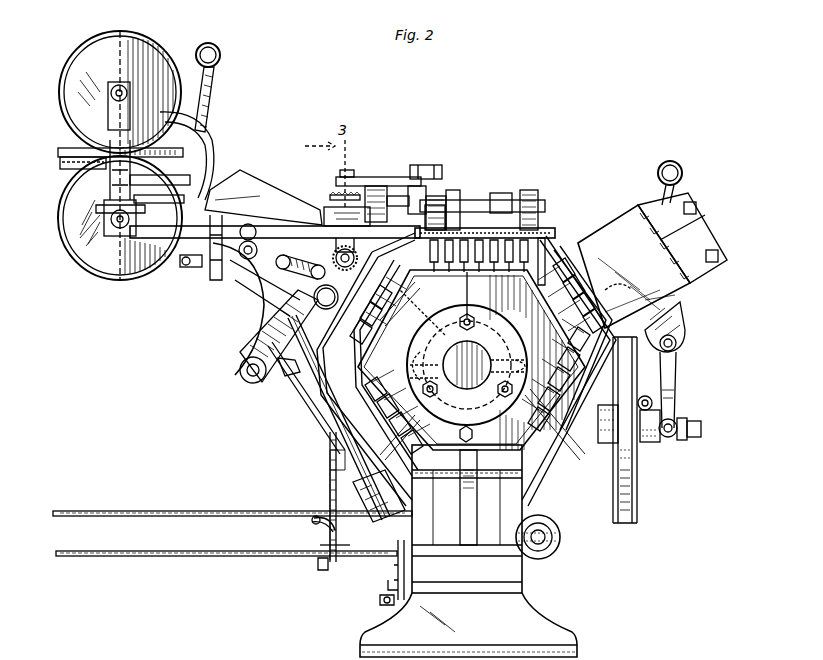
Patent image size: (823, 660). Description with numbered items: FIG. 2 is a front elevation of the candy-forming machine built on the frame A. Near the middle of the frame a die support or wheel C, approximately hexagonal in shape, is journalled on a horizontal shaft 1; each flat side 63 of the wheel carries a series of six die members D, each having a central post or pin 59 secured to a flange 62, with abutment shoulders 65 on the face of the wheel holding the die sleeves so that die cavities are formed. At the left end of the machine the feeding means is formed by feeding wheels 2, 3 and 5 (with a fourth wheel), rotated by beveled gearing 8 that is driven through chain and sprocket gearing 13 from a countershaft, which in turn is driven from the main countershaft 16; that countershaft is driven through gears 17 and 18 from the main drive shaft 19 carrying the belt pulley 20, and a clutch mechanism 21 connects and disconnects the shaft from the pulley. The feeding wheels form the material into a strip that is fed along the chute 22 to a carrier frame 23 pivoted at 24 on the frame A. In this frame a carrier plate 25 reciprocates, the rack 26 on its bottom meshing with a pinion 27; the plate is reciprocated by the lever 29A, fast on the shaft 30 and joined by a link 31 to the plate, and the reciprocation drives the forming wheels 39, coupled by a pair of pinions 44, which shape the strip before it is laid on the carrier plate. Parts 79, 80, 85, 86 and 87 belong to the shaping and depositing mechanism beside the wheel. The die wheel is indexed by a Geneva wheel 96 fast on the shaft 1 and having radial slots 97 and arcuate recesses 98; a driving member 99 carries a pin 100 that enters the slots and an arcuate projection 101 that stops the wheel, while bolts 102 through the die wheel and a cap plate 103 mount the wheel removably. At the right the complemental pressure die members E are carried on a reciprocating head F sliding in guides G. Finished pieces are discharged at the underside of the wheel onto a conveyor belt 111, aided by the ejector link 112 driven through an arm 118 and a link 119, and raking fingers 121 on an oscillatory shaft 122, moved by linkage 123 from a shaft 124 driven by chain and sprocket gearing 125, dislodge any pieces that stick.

The horizontal shaft 1 is at (453, 365).
The feeding wheel 2 is at (90, 46).
The feeding wheel 3 is at (84, 252).
The feeding wheel 5 is at (58, 156).
The beveled gearing 8 is at (112, 235).
The chain and sprocket gearing 13 is at (92, 205).
The main countershaft 16 is at (458, 443).
The gear 17 is at (455, 600).
The gear 18 is at (590, 470).
The main drive shaft 19 is at (696, 421).
The belt pulley 20 is at (638, 505).
The clutch mechanism 21 is at (648, 446).
The chute 22 is at (258, 192).
The frame 23 is at (258, 305).
The pivot 24 is at (212, 280).
The carrier plate 25 is at (258, 330).
The guide 26 is at (426, 298).
The pinion 27 is at (316, 280).
The arm 29A is at (305, 392).
The shaft 30 is at (252, 384).
The link 31 is at (316, 262).
The forming wheels 39 is at (324, 216).
The pinions 44 is at (340, 192).
The central post or pin 59 is at (348, 320).
The flanges 62 is at (458, 290).
The flat side 63 is at (470, 226).
The abutment shoulders 65 is at (424, 258).
The upper rail 79 is at (490, 200).
The block 80 is at (434, 195).
The shaft 85 is at (377, 178).
The collar 86 is at (412, 178).
The bar 87 is at (340, 174).
The Geneva wheel 96 is at (411, 362).
The radial slots 97 is at (449, 334).
The arcuate recesses 98 is at (471, 360).
The driving member 99 is at (568, 258).
The pin 100 is at (470, 300).
The arcuate projection 101 is at (555, 418).
The bolts 102 is at (474, 368).
The cap plate 103 is at (440, 425).
The conveyor belt 111 is at (180, 511).
The ejector link 112 is at (560, 530).
The arm 118 is at (380, 600).
The link 119 is at (396, 578).
The raking fingers 121 is at (334, 463).
The oscillatory shaft 122 is at (312, 412).
The linkage 123 is at (320, 532).
The shaft 124 is at (316, 555).
The chain and sprocket gearing 125 is at (330, 492).
The frame A is at (450, 190).
The die support or wheel C is at (548, 246).
The die members D is at (528, 226).
The complemental die members E is at (682, 322).
The reciprocating head F is at (680, 292).
The guides G is at (706, 228).